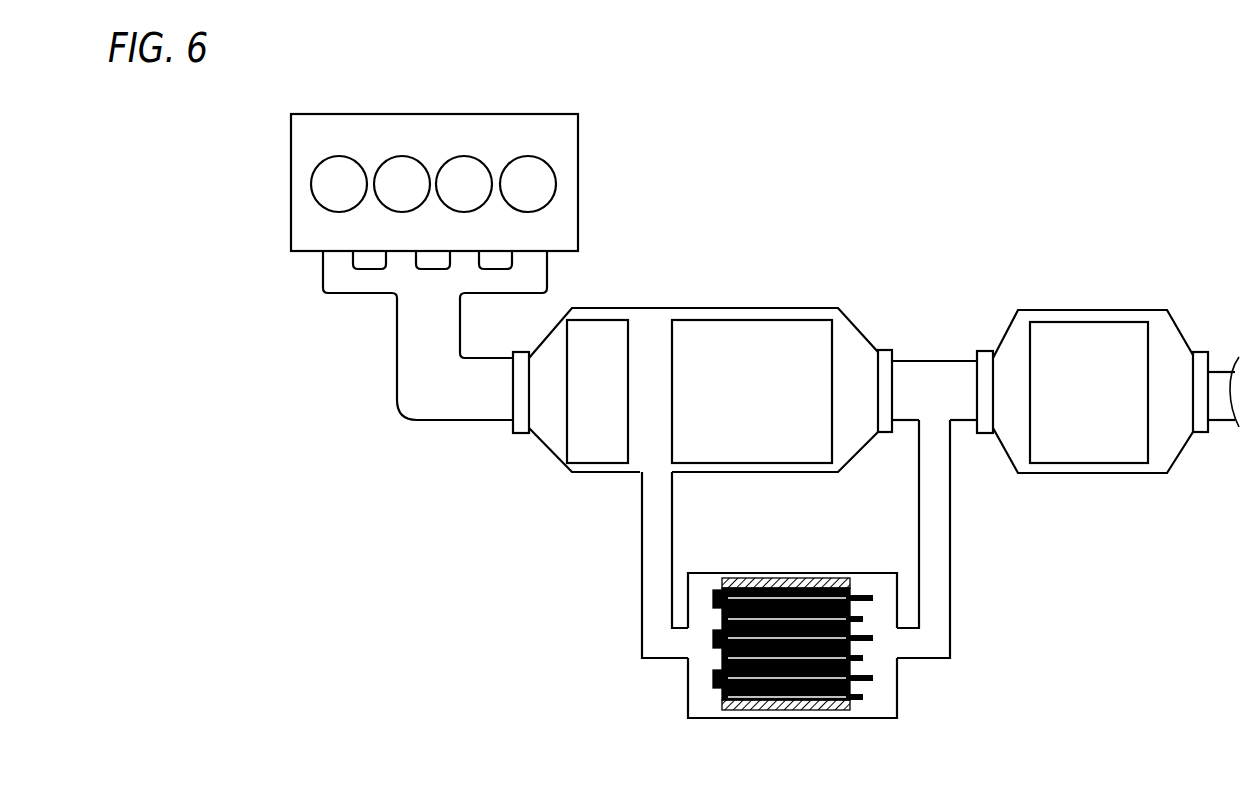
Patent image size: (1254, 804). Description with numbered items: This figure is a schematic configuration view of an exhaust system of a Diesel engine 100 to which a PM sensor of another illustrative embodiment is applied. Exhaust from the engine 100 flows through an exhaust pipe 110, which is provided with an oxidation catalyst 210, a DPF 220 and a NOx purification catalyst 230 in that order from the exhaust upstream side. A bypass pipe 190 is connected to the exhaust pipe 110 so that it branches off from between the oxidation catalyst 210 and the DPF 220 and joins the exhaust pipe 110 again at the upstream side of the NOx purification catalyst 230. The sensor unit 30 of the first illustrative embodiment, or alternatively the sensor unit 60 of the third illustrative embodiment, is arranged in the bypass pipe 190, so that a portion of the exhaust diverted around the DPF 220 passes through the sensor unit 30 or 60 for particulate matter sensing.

The engine 100 is at (512, 127).
The exhaust pipe 110 is at (443, 422).
The bypass pipe 190 is at (641, 575).
The oxidation catalyst 210 is at (617, 403).
The DPF 220 is at (769, 403).
The NOx purification catalyst 230 is at (1112, 404).
The sensor unit 30 is at (792, 688).
The sensor unit 60 is at (797, 720).